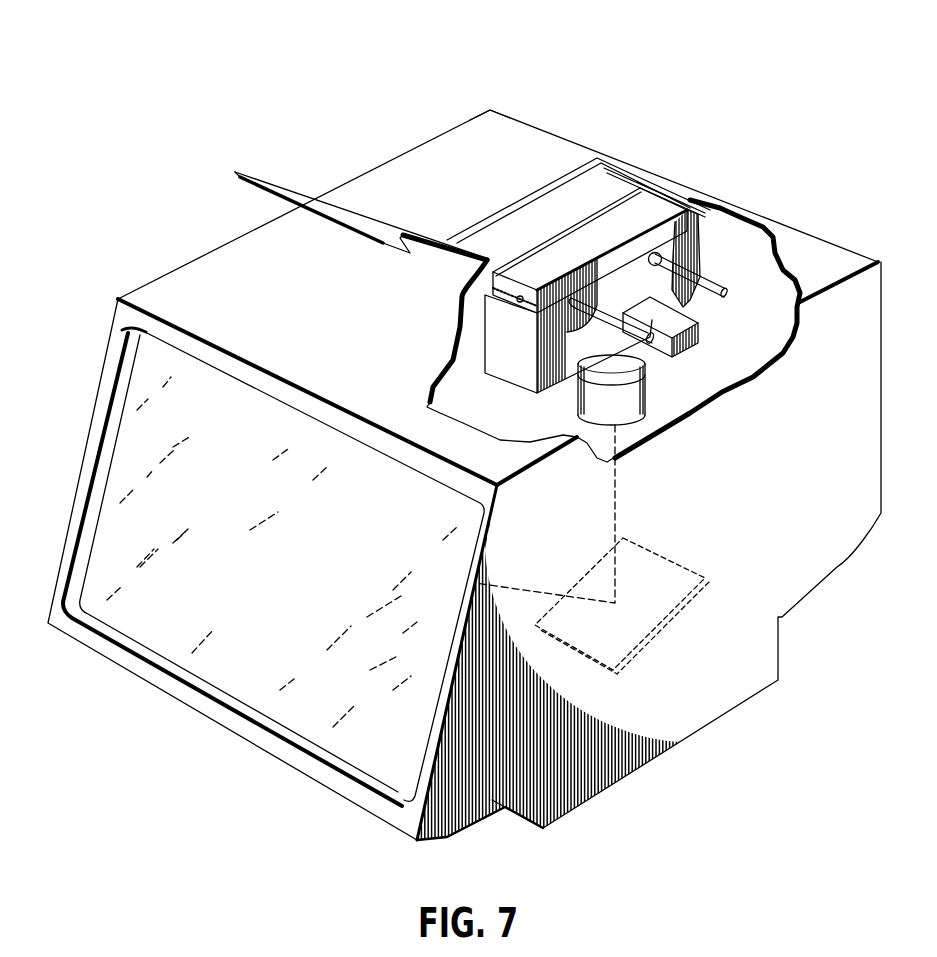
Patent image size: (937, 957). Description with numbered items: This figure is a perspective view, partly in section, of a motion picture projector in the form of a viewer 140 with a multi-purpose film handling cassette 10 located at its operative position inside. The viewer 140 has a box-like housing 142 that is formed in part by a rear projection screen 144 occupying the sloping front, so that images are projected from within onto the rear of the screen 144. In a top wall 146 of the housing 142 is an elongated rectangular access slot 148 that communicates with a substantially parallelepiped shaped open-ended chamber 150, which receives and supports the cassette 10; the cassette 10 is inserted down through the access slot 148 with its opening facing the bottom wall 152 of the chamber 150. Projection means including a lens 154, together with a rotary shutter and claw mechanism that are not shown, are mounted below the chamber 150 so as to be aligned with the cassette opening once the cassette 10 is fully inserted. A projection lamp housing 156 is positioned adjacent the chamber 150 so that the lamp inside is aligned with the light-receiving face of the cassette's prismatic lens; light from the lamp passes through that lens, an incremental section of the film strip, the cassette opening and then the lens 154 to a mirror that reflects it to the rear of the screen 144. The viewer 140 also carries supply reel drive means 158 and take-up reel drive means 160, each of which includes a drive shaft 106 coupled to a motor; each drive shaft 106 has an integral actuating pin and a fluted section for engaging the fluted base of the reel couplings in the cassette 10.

The viewer 140 is at (338, 110).
The box-like housing 142 is at (490, 110).
The rear projection screen 144 is at (290, 697).
The top wall 146 is at (547, 157).
The access slot 148 is at (642, 187).
The cassette 10 is at (578, 245).
The drive shaft 106 is at (613, 323).
The chamber 150 is at (517, 300).
The bottom wall 152 is at (527, 397).
The lens 154 is at (602, 400).
The projection lamp housing 156 is at (700, 327).
The supply reel drive means 158 is at (719, 278).
The take-up reel drive means 160 is at (657, 353).